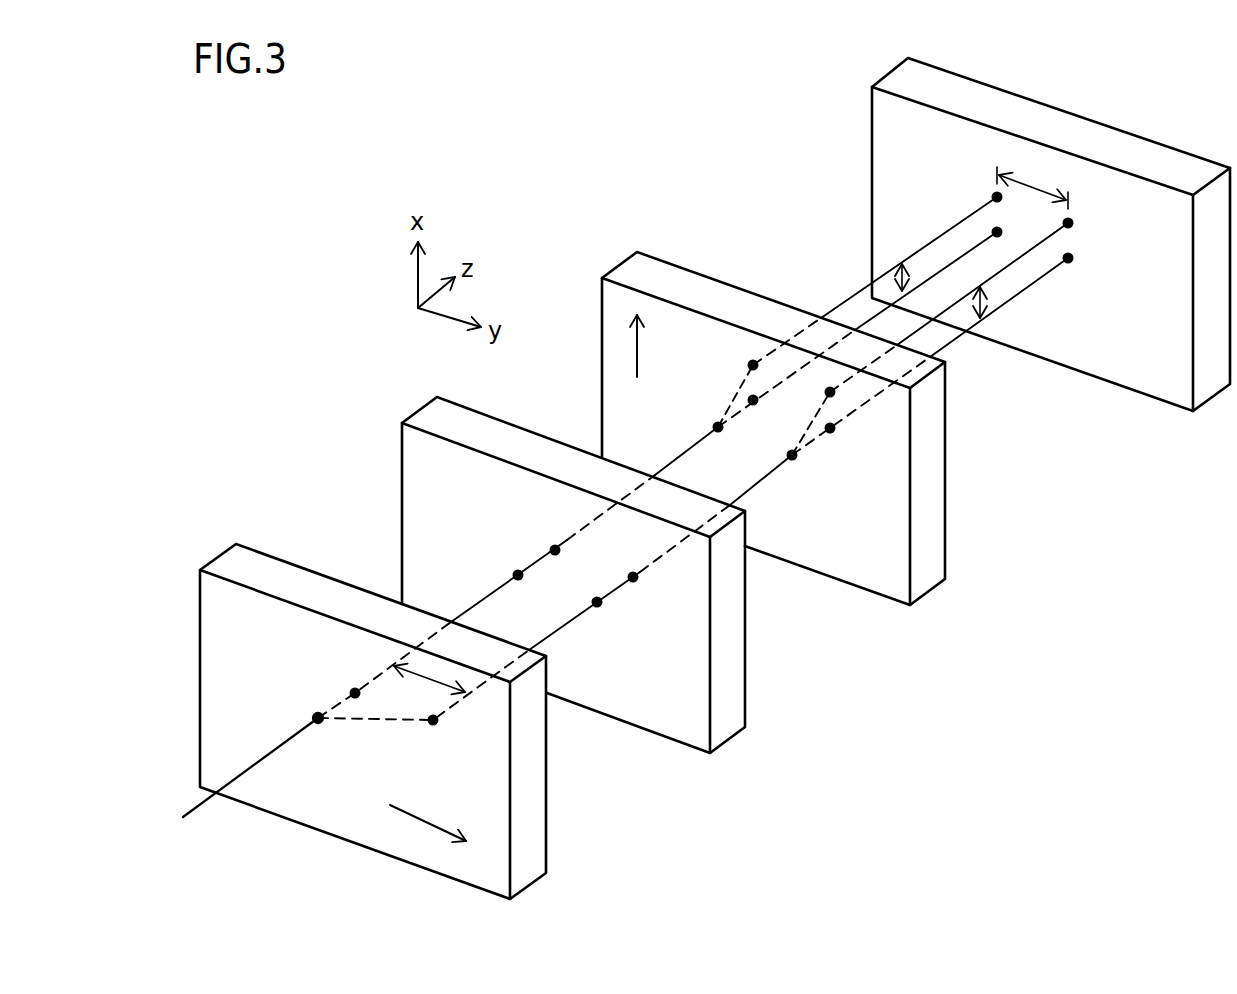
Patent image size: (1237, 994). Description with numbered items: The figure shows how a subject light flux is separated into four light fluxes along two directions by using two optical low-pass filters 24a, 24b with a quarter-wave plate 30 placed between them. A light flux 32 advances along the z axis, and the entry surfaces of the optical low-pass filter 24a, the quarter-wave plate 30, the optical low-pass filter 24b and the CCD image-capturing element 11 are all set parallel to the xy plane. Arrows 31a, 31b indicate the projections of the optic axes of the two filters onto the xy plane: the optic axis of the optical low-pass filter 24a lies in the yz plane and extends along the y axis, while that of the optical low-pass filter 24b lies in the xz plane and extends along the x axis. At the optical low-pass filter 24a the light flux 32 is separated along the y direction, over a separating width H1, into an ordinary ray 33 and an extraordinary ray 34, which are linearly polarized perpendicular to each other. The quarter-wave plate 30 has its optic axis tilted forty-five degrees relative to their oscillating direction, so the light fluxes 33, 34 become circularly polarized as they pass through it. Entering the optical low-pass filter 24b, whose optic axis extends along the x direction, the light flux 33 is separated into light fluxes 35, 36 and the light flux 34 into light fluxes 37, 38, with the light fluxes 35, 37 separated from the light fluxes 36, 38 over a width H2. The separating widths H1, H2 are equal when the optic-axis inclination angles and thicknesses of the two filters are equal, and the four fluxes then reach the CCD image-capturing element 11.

The CCD image-capturing element 11 is at (1065, 367).
The optical low-pass filter 24a is at (200, 647).
The optical low-pass filter 24b is at (828, 583).
The quarter-wave plate 30 is at (618, 727).
The arrow 31a is at (413, 813).
The arrow 31b is at (636, 338).
The light flux 32 is at (205, 798).
The light flux (ordinary ray) 33 is at (348, 689).
The light flux (extraordinary ray) 34 is at (392, 722).
The light flux 35 is at (778, 382).
The light flux 36 is at (735, 400).
The light flux 37 is at (858, 406).
The light flux 38 is at (820, 420).
The separating width H1 is at (446, 690).
The separating width H2 is at (900, 278).